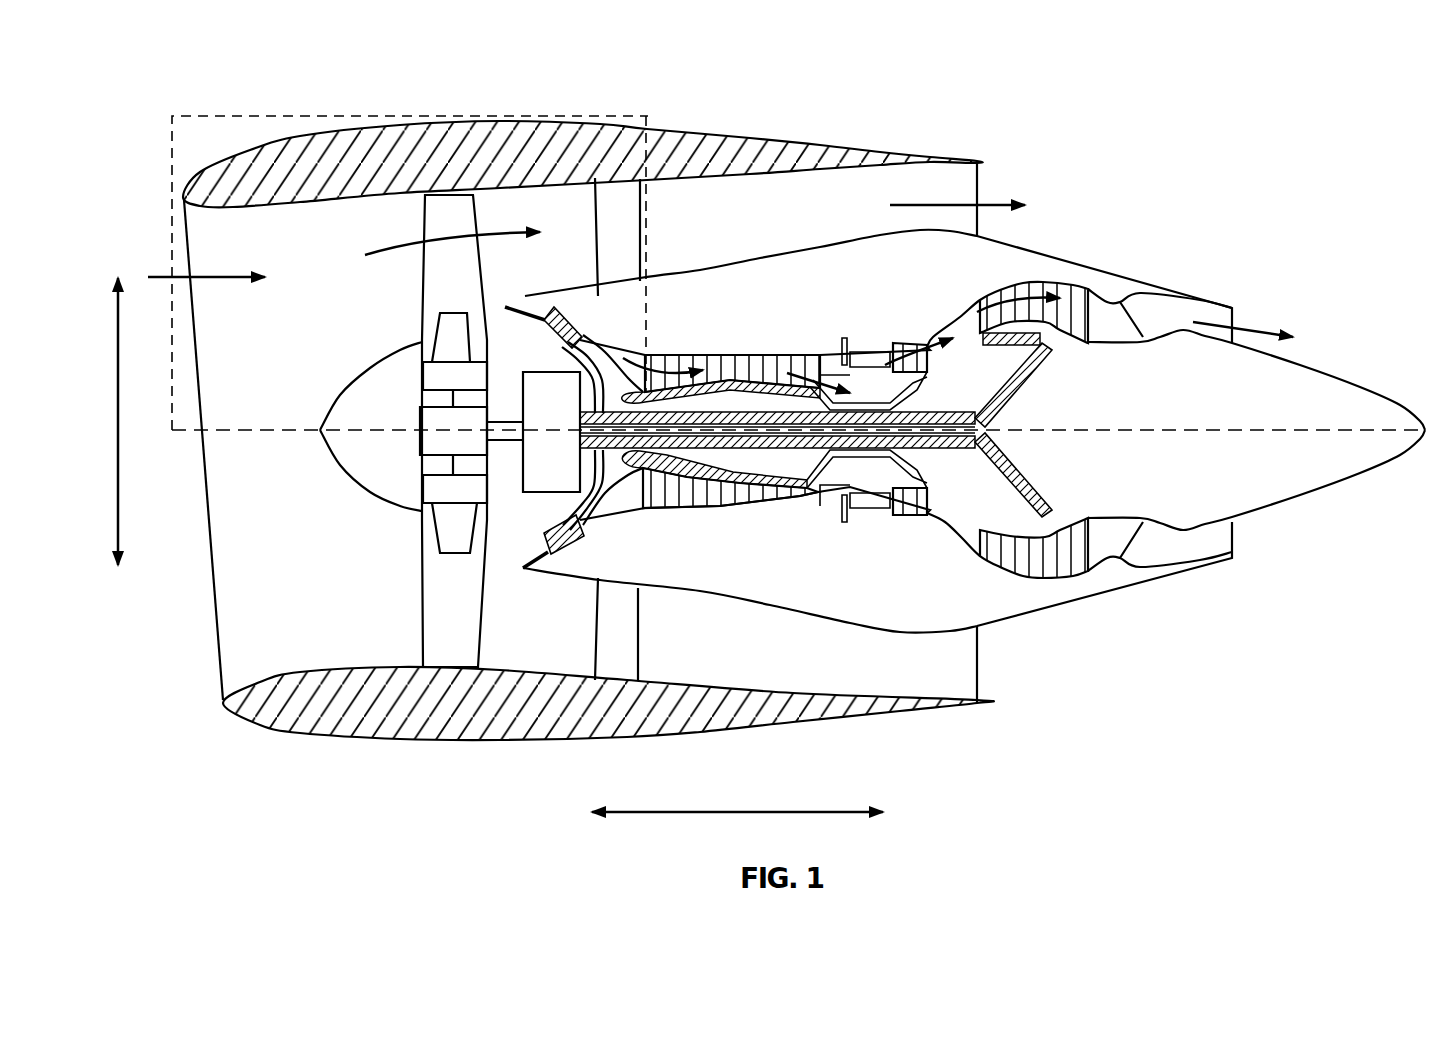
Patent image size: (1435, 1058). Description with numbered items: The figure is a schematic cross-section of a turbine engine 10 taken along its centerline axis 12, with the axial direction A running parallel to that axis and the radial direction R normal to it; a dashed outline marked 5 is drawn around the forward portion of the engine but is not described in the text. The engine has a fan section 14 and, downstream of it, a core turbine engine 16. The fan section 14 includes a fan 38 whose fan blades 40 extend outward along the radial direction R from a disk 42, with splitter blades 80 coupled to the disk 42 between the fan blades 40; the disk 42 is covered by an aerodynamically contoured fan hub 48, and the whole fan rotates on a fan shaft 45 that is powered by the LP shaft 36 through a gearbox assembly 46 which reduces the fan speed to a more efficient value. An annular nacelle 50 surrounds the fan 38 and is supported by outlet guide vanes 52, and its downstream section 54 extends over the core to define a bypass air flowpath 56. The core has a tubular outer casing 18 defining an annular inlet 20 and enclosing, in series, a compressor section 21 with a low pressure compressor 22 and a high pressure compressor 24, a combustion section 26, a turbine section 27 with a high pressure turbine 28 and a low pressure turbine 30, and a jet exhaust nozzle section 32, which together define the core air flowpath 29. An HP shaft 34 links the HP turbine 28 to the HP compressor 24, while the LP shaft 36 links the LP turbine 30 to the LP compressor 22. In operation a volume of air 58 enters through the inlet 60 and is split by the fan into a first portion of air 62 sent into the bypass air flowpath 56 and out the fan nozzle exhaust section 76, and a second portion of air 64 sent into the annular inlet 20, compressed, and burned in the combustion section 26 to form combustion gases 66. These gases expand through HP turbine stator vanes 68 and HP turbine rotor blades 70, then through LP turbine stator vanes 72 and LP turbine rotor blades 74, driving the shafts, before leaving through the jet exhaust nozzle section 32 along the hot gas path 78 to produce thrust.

The fan section 5 is at (172, 193).
The turbine engine 10 is at (1253, 90).
The centerline axis 12 is at (1185, 430).
The fan section 14 is at (380, 200).
The core turbine engine 16 is at (848, 272).
The outer casing 18 is at (772, 605).
The annular inlet 20 is at (540, 550).
The compressor section 21 is at (707, 303).
The low pressure compressor 22 is at (598, 525).
The high pressure compressor 24 is at (682, 492).
The combustion section 26 is at (862, 512).
The turbine section 27 is at (970, 287).
The high pressure turbine 28 is at (985, 500).
The core air flowpath 29 is at (533, 540).
The low pressure turbine 30 is at (1068, 574).
The jet exhaust nozzle section 32 is at (1130, 562).
The high pressure shaft 34 is at (843, 373).
The low pressure shaft 36 is at (960, 407).
The fan 38 is at (370, 512).
The fan blades 40 is at (422, 567).
The disk 42 is at (437, 372).
The fan shaft 45 is at (493, 418).
The gearbox assembly 46 is at (541, 393).
The fan hub 48 is at (338, 445).
The nacelle 50 is at (400, 742).
The outlet guide vanes 52 is at (643, 213).
The downstream section of the nacelle 54 is at (880, 148).
The bypass air flowpath 56 is at (783, 210).
The volume of air 58 is at (238, 277).
The inlet 60 is at (210, 598).
The first portion of air 62 is at (398, 250).
The second portion of air 64 is at (500, 307).
The combustion gases 66 is at (920, 357).
The HP turbine stator vanes 68 is at (880, 512).
The HP turbine rotor blades 70 is at (905, 500).
The LP turbine stator vanes 72 is at (985, 547).
The LP turbine rotor blades 74 is at (997, 572).
The fan nozzle exhaust section 76 is at (968, 184).
The hot gas path 78 is at (965, 332).
The splitter blades 80 is at (437, 330).
The radial direction R is at (118, 423).
The axial direction A is at (740, 813).